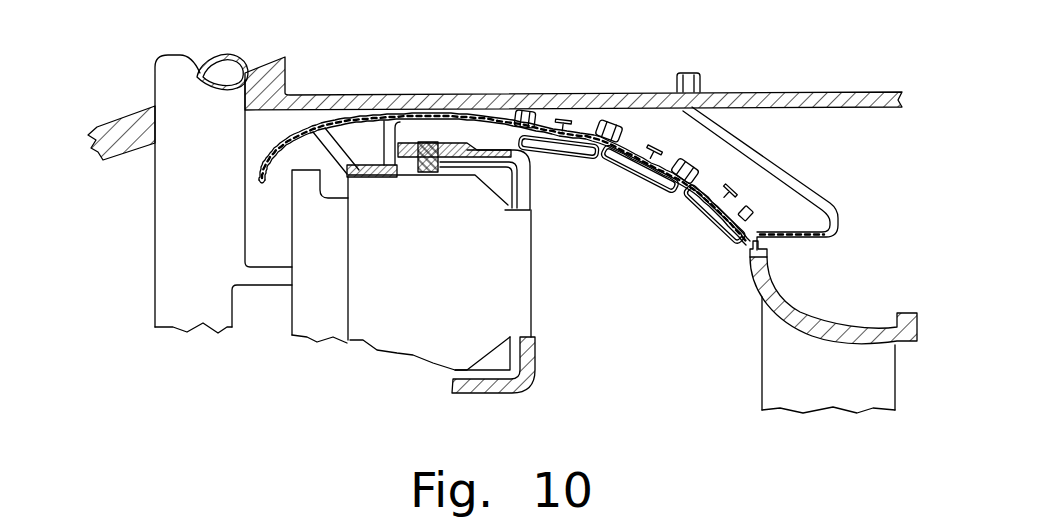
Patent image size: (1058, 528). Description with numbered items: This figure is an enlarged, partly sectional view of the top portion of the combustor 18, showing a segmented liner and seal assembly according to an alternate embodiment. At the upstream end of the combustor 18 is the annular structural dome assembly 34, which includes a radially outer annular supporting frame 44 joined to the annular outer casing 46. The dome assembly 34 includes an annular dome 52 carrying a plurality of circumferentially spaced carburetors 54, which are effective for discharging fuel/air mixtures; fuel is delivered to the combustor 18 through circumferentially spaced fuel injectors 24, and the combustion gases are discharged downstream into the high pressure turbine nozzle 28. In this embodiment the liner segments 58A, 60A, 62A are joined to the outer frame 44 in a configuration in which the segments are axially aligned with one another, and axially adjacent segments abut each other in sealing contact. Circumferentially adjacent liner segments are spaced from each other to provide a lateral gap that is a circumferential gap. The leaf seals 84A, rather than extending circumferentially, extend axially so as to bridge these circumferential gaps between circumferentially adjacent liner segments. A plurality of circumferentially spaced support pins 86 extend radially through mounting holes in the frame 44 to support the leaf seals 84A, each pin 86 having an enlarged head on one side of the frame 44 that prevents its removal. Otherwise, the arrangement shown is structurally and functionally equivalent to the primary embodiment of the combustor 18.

The combustor 18 is at (776, 59).
The fuel injector 24 is at (155, 233).
The high pressure turbine nozzle 28 is at (800, 300).
The dome assembly 34 is at (328, 123).
The outer supporting frame 44 is at (442, 115).
The outer casing 46 is at (625, 92).
The dome 52 is at (391, 177).
The carburetor 54 is at (405, 291).
The liner segment 58A is at (565, 153).
The liner segment 60A is at (640, 169).
The liner segment 62A is at (700, 217).
The leaf seal 84A is at (658, 161).
The support pin 86 is at (713, 188).